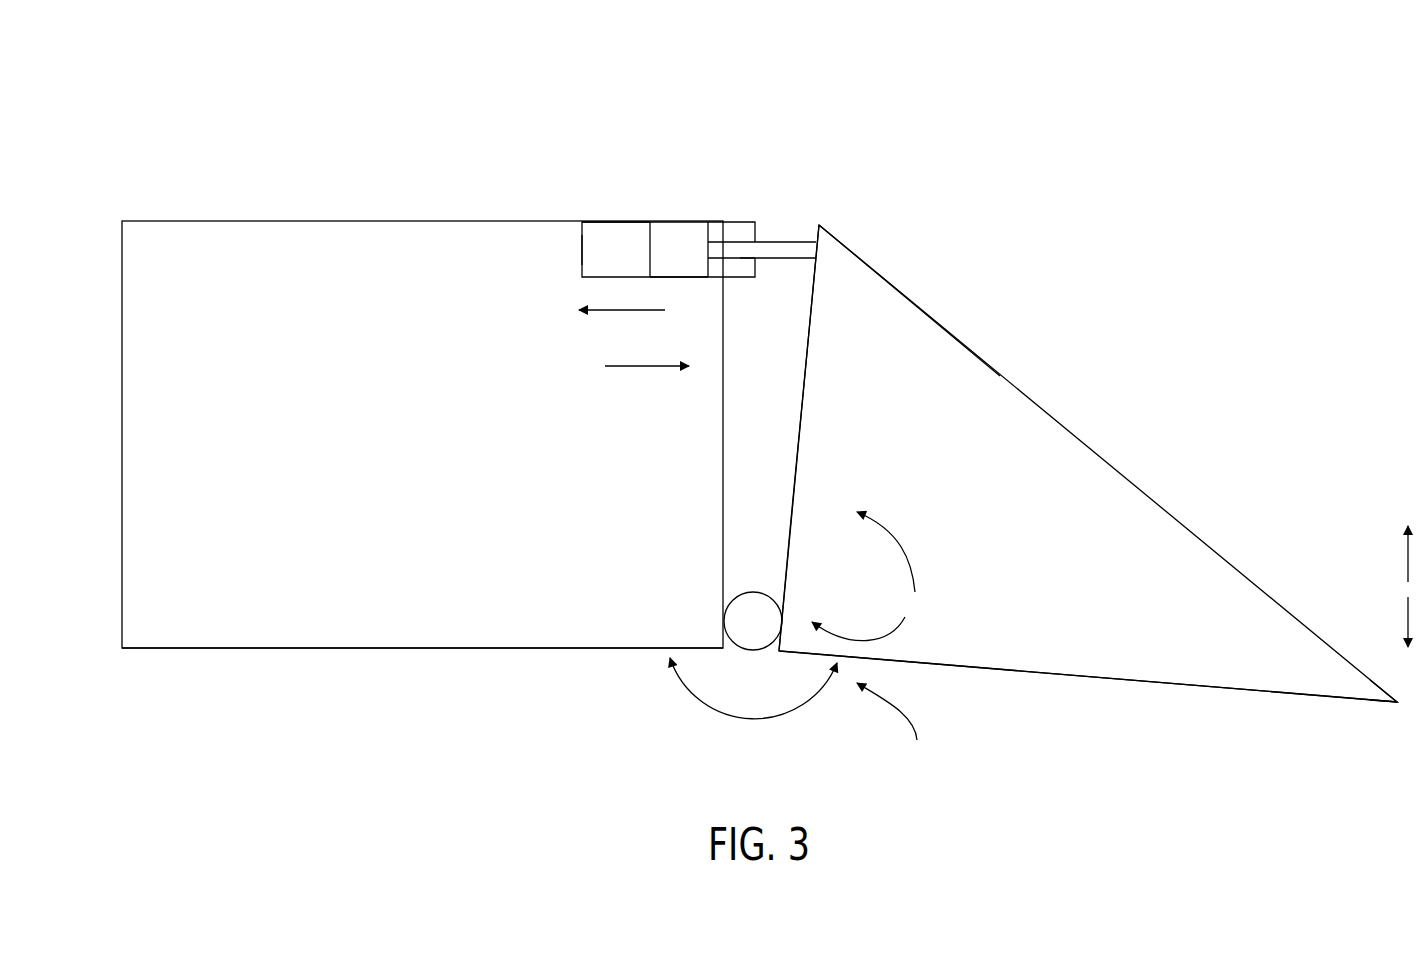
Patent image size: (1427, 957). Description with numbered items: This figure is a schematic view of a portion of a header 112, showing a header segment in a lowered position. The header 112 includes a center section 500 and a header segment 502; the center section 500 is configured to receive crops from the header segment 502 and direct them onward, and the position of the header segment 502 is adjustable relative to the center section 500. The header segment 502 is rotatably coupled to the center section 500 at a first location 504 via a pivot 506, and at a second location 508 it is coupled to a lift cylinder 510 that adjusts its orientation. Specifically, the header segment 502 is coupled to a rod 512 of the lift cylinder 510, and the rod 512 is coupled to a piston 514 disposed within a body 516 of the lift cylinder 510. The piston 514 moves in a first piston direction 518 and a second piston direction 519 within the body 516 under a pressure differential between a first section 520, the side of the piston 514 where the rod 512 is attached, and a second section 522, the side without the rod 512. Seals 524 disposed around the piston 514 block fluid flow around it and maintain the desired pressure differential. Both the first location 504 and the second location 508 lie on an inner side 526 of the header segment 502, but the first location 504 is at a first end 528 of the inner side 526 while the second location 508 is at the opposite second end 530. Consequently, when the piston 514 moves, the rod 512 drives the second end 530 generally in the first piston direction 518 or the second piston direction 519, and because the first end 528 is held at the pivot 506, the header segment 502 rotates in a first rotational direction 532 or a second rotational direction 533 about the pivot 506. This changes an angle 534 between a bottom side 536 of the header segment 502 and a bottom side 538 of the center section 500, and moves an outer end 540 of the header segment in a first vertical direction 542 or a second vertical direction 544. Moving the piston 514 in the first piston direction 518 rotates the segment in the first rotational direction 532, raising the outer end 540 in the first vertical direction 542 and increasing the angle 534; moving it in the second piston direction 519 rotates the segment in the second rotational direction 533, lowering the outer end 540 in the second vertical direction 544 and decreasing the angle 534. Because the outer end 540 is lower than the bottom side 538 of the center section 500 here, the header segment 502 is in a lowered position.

The header 112 is at (1330, 132).
The center section 500 is at (240, 221).
The header segment 502 is at (958, 355).
The first location 504 is at (790, 612).
The pivot 506 is at (760, 596).
The second location 508 is at (822, 253).
The lift cylinder 510 is at (737, 190).
The rod 512 is at (790, 242).
The piston 514 is at (668, 228).
The body 516 is at (582, 248).
The first piston direction 518 is at (625, 311).
The second piston direction 519 is at (645, 367).
The first section 520 is at (747, 267).
The second section 522 is at (603, 228).
The seals 524 is at (697, 222).
The inner side 526 is at (808, 447).
The first end 528 is at (895, 727).
The second end 530 is at (933, 237).
The first rotational direction 532 is at (912, 540).
The second rotational direction 533 is at (895, 632).
The angle 534 is at (753, 710).
The bottom side of the header segment 536 is at (1088, 676).
The bottom side of the center section 538 is at (424, 648).
The outer end 540 is at (1395, 712).
The first vertical direction 542 is at (1408, 558).
The second vertical direction 544 is at (1408, 622).